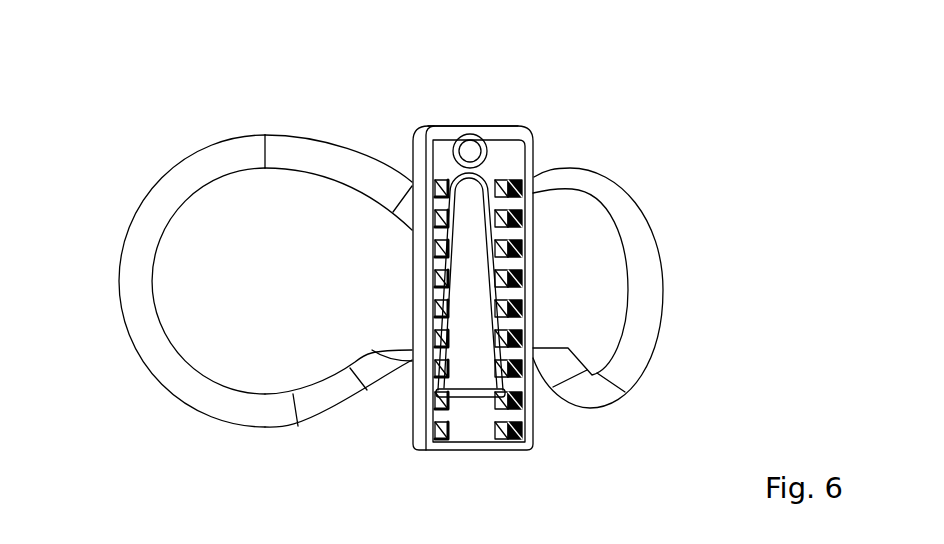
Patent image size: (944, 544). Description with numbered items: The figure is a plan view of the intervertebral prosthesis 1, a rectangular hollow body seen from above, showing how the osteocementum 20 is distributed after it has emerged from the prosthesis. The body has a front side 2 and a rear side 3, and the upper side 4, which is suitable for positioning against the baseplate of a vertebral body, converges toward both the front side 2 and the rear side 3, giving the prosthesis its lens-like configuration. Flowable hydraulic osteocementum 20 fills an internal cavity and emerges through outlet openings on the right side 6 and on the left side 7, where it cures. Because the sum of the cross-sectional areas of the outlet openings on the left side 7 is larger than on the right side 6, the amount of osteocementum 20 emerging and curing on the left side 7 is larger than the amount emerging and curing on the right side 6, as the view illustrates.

The intervertebral prosthesis 1 is at (543, 130).
The front side 2 is at (457, 450).
The rear side 3 is at (480, 125).
The upper side 4 is at (440, 162).
The right side 6 is at (534, 430).
The left side 7 is at (413, 420).
The osteocementum 20 is at (173, 155).